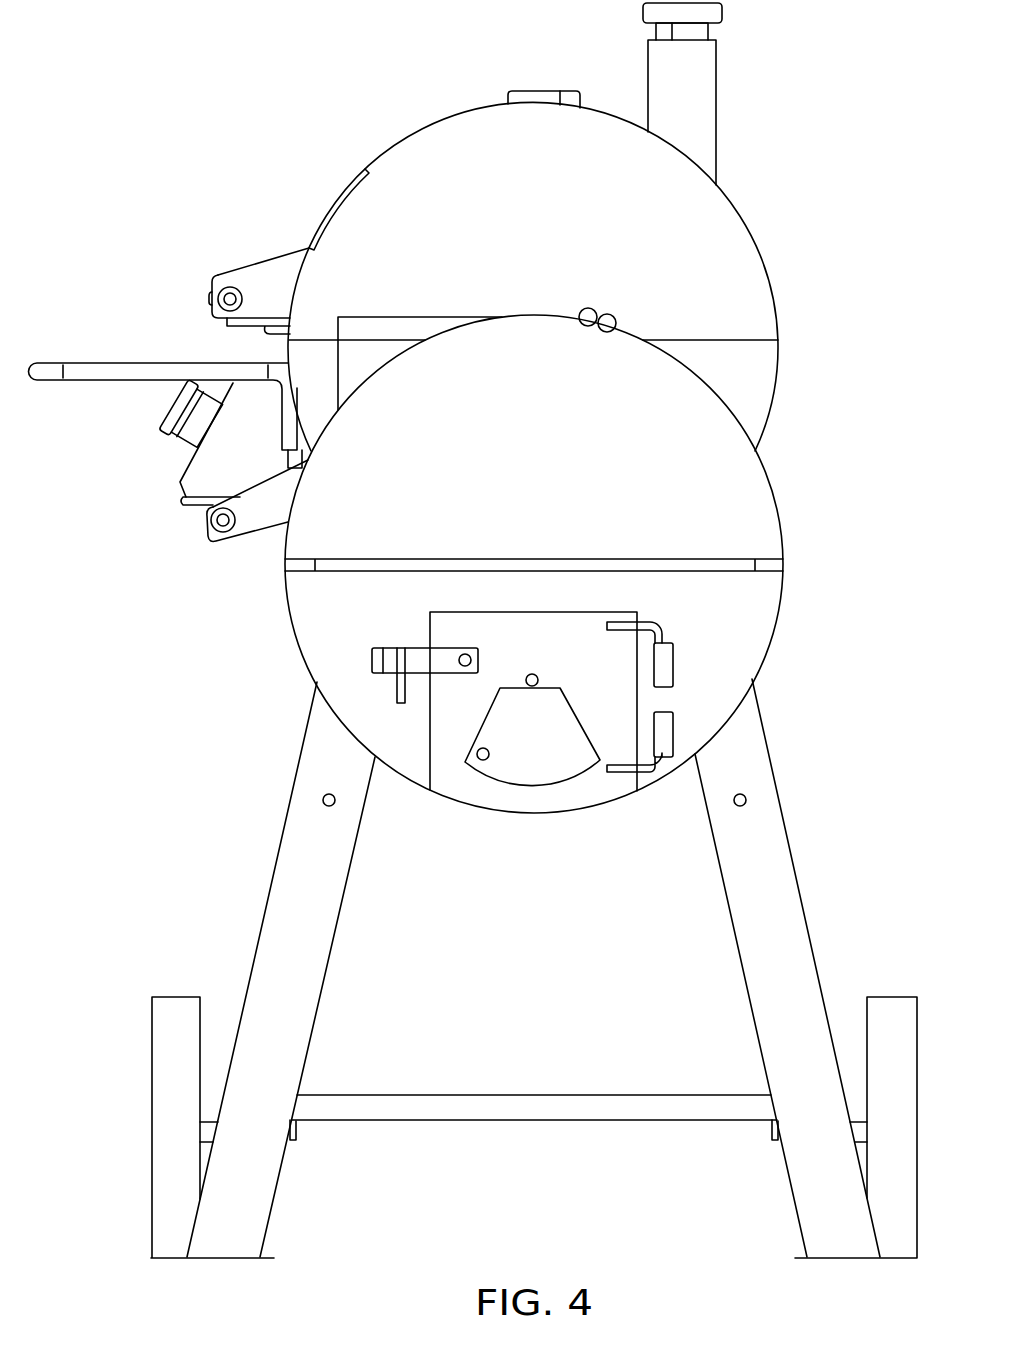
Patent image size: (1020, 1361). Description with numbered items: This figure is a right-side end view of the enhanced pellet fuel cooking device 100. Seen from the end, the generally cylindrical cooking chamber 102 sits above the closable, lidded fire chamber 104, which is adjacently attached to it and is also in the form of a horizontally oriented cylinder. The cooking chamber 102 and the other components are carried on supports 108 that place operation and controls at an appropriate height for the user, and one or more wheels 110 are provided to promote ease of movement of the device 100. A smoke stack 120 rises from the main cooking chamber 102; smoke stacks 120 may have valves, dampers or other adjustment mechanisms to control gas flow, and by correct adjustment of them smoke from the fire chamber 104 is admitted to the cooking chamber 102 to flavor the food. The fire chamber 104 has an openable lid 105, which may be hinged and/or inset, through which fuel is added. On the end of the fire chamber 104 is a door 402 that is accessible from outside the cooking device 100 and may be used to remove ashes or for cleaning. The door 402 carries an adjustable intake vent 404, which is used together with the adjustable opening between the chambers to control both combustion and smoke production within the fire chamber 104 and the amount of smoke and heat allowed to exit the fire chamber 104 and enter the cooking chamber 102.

The cooking device 100 is at (240, 103).
The cooking chamber 102 is at (748, 227).
The fire chamber 104 is at (774, 496).
The openable lid 105 is at (283, 511).
The supports 108 is at (800, 887).
The wheels 110 is at (150, 1130).
The smoke stacks 120 is at (717, 112).
The door 402 is at (600, 670).
The adjustable intake vent 404 is at (533, 785).